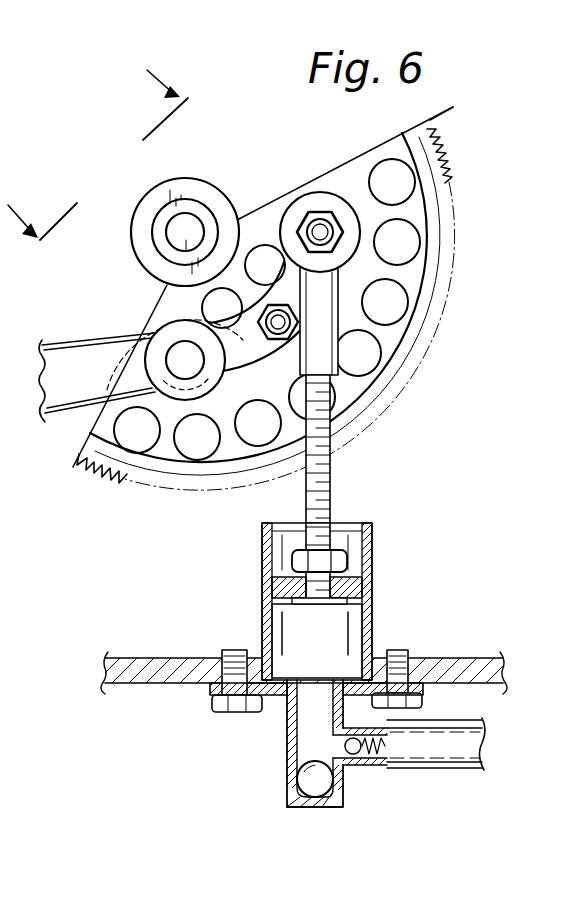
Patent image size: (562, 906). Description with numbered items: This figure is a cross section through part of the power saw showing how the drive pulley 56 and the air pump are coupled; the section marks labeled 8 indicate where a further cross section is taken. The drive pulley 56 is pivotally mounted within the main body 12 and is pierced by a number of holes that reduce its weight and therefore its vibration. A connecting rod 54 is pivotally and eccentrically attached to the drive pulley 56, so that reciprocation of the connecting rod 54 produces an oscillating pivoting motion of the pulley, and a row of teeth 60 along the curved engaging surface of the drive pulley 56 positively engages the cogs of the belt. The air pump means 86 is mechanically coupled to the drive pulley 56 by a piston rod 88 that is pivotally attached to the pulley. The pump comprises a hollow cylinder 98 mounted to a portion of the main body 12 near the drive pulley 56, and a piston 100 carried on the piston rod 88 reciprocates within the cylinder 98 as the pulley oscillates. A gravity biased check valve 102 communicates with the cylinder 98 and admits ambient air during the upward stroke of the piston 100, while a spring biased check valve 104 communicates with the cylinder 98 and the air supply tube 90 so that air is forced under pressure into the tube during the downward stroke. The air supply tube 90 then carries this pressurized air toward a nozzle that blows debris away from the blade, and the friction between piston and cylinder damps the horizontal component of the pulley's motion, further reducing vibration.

The section line 8- 8 is at (96, 141).
The main body 12 is at (172, 670).
The connecting rod 54 is at (88, 362).
The drive pulley 56 is at (357, 165).
The teeth 60 is at (453, 107).
The air pump means 86 is at (378, 552).
The piston rod 88 is at (333, 478).
The air supply tube 90 is at (453, 767).
The hollow cylinder 98 is at (372, 627).
The piston 100 is at (283, 598).
The gravity biased check valve 102 is at (287, 737).
The spring biased check valve 104 is at (377, 765).